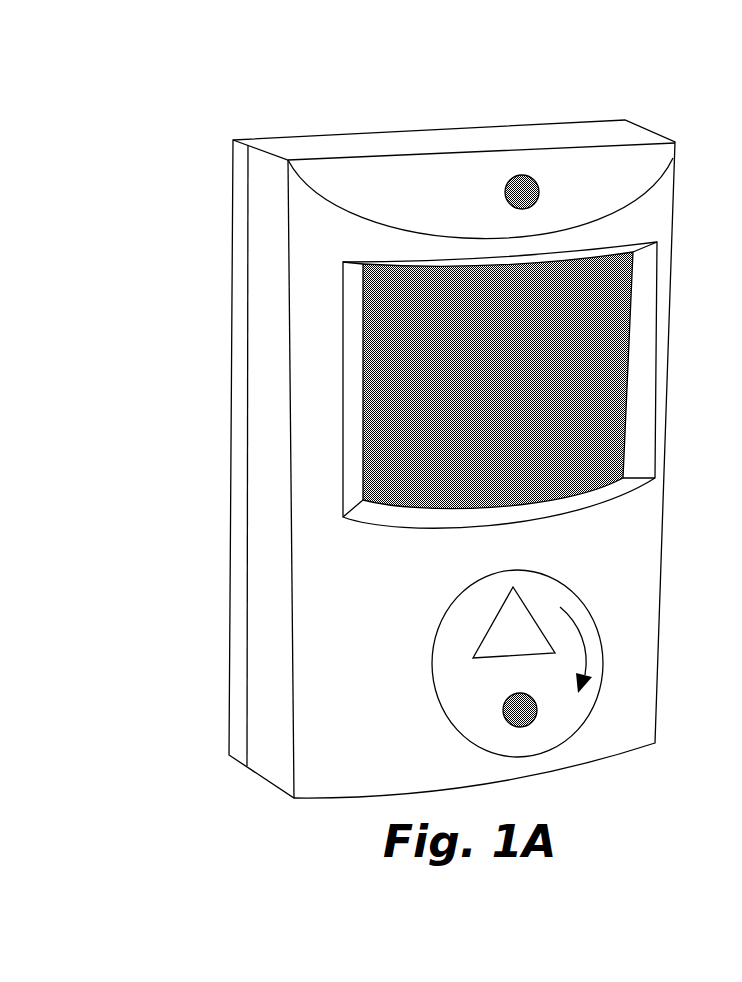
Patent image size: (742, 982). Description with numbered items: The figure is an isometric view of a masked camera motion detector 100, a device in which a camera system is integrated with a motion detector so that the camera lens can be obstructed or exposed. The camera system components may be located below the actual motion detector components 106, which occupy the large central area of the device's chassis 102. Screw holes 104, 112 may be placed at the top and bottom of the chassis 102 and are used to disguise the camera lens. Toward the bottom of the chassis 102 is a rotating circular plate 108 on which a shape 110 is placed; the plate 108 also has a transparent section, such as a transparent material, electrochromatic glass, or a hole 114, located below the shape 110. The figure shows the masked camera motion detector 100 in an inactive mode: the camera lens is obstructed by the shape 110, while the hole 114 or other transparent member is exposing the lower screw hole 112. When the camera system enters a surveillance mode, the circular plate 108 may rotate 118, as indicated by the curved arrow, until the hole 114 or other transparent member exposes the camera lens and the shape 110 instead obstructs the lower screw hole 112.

The masked camera motion detector 100 is at (184, 112).
The chassis 102 is at (379, 643).
The screw hole 104 is at (505, 190).
The motion detector components 106 is at (500, 385).
The rotating circular plate 108 is at (453, 602).
The shape 110 is at (533, 646).
The lower screw hole 112 is at (503, 710).
The hole 114 is at (515, 728).
The rotation of the circular plate 118 is at (585, 645).